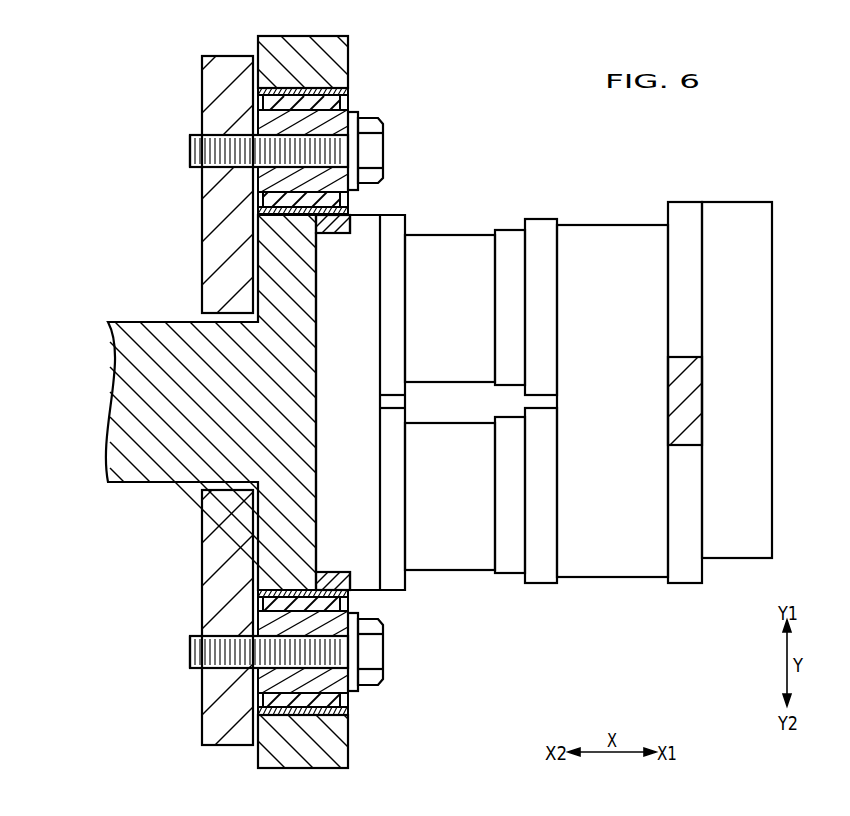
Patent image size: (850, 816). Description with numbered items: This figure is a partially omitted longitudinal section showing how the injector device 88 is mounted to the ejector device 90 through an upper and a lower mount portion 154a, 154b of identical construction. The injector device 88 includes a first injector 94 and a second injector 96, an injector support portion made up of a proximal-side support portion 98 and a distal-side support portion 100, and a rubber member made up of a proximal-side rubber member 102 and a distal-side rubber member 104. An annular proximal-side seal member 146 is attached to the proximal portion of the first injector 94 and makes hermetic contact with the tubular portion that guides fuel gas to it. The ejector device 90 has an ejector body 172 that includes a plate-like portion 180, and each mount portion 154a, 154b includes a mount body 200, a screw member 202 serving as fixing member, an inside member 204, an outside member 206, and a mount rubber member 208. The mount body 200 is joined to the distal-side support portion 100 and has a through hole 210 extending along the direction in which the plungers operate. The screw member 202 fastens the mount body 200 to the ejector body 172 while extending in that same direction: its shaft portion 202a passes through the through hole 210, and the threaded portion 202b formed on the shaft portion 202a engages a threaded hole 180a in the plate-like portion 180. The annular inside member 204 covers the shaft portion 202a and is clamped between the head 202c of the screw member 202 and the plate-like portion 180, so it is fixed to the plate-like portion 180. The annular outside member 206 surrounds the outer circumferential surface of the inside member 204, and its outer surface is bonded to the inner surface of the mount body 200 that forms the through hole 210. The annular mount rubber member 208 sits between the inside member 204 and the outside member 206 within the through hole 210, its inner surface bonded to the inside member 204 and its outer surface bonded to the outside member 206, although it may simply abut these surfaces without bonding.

The injector device 88 is at (569, 372).
The ejector device 90 is at (189, 406).
The first injector 94 is at (470, 240).
The second injector 96 is at (467, 560).
The proximal-side support portion 98 is at (760, 406).
The distal-side support portion 100 is at (182, 402).
The proximal-side rubber member 102 is at (614, 570).
The distal-side rubber member 104 is at (382, 500).
The proximal-side seal member 146 is at (270, 256).
The mount portion 154a is at (416, 77).
The mount portion 154b is at (416, 730).
The ejector body 172 is at (221, 70).
The plate-like portion 180 is at (201, 406).
The threaded hole 180a is at (208, 152).
The mount body 200 is at (337, 63).
The screw member 202 is at (288, 396).
The shaft portion 202a is at (287, 147).
The threaded portion 202b is at (207, 152).
The head 202c is at (368, 142).
The inside member 204 is at (340, 177).
The outside member 206 is at (329, 222).
The mount rubber member 208 is at (340, 103).
The through hole 210 is at (292, 214).